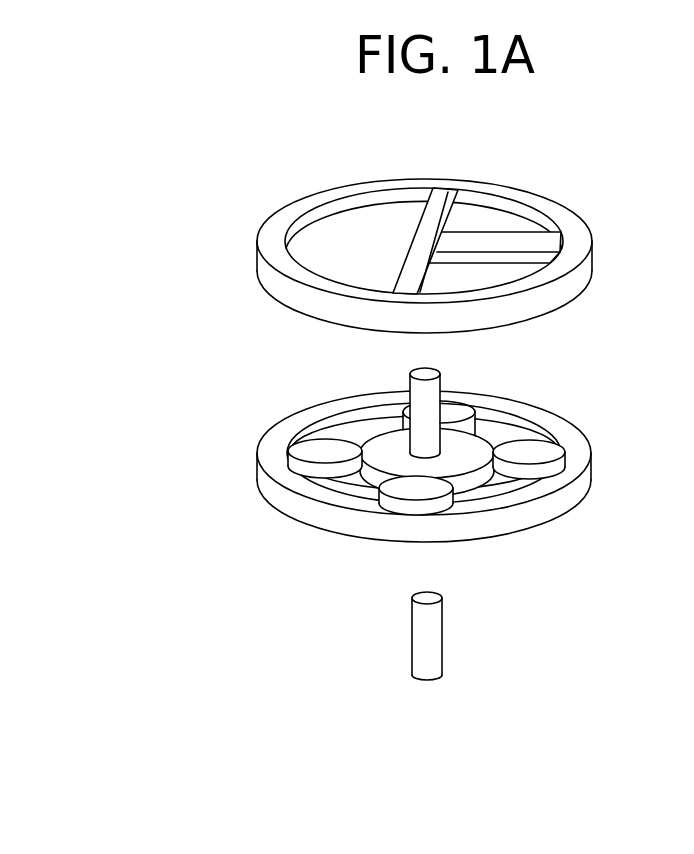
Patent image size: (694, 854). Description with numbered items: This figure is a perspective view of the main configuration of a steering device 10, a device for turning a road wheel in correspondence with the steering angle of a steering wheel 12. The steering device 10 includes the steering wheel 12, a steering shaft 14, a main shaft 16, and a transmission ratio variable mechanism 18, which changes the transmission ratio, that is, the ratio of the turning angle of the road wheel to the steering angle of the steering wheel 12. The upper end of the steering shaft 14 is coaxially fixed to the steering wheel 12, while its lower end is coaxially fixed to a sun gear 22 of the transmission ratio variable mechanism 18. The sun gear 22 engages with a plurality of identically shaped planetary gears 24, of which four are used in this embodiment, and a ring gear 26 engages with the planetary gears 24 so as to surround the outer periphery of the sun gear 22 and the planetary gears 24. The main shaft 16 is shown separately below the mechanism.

The steering device 10 is at (463, 401).
The steering wheel 12 is at (590, 230).
The steering shaft 14 is at (441, 380).
The main shaft 16 is at (442, 637).
The transmission ratio variable mechanism 18 is at (460, 441).
The sun gear 22 is at (505, 423).
The planetary gear 24 is at (540, 452).
The ring gear 26 is at (575, 503).